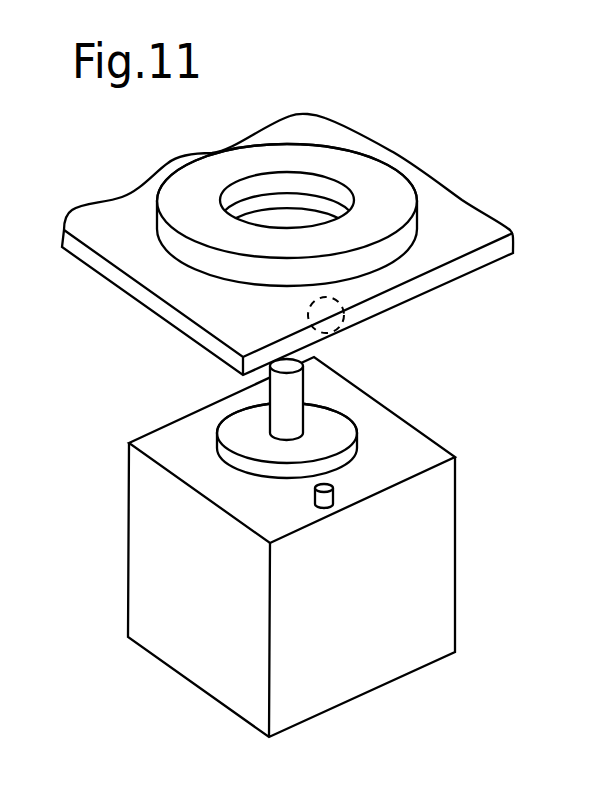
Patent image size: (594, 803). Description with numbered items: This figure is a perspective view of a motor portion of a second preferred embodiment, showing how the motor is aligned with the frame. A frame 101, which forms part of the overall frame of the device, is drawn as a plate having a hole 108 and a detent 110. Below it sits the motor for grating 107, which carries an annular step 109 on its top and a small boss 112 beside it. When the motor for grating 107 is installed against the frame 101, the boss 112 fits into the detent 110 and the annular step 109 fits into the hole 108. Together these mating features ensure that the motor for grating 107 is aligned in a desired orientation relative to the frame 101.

The frame 101 is at (462, 208).
The hole 108 is at (293, 218).
The detent 110 is at (342, 303).
The motor for grating 107 is at (442, 512).
The annular step 109 is at (348, 413).
The boss 112 is at (334, 491).